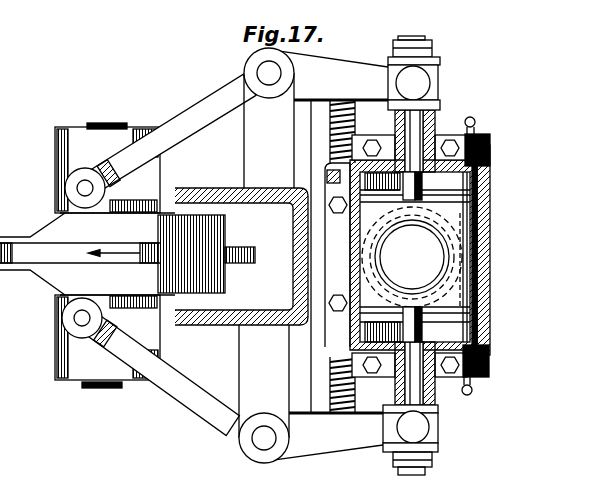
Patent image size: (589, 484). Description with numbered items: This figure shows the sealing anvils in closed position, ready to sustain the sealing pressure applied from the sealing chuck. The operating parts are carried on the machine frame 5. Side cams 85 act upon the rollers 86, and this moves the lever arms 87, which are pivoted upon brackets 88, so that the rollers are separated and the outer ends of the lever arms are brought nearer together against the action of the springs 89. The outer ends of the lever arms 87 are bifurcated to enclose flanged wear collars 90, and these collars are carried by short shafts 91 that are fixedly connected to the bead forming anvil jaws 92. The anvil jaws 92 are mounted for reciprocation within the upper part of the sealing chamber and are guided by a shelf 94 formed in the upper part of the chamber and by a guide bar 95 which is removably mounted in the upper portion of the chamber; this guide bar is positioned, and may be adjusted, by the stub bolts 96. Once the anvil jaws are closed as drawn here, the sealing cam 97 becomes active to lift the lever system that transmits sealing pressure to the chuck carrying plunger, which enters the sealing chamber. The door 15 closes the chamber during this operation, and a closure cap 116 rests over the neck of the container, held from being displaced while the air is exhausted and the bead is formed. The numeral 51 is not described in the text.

The machine frame 5 is at (212, 187).
The door 15 is at (470, 260).
The clamp fastener 51 is at (107, 125).
The side cams 85 is at (45, 235).
The rollers 86 is at (55, 181).
The lever arms 87 is at (181, 109).
The brackets 88 is at (313, 255).
The springs 89 is at (330, 139).
The flanged wear collars 90 is at (441, 62).
The short shafts 91 is at (437, 103).
The bead forming anvil jaws 92 is at (457, 222).
The shelf 94 is at (452, 181).
The guide bar 95 is at (470, 243).
The stub bolts 96 is at (475, 118).
The sealing cam 97 is at (250, 250).
The closure cap 116 is at (448, 265).